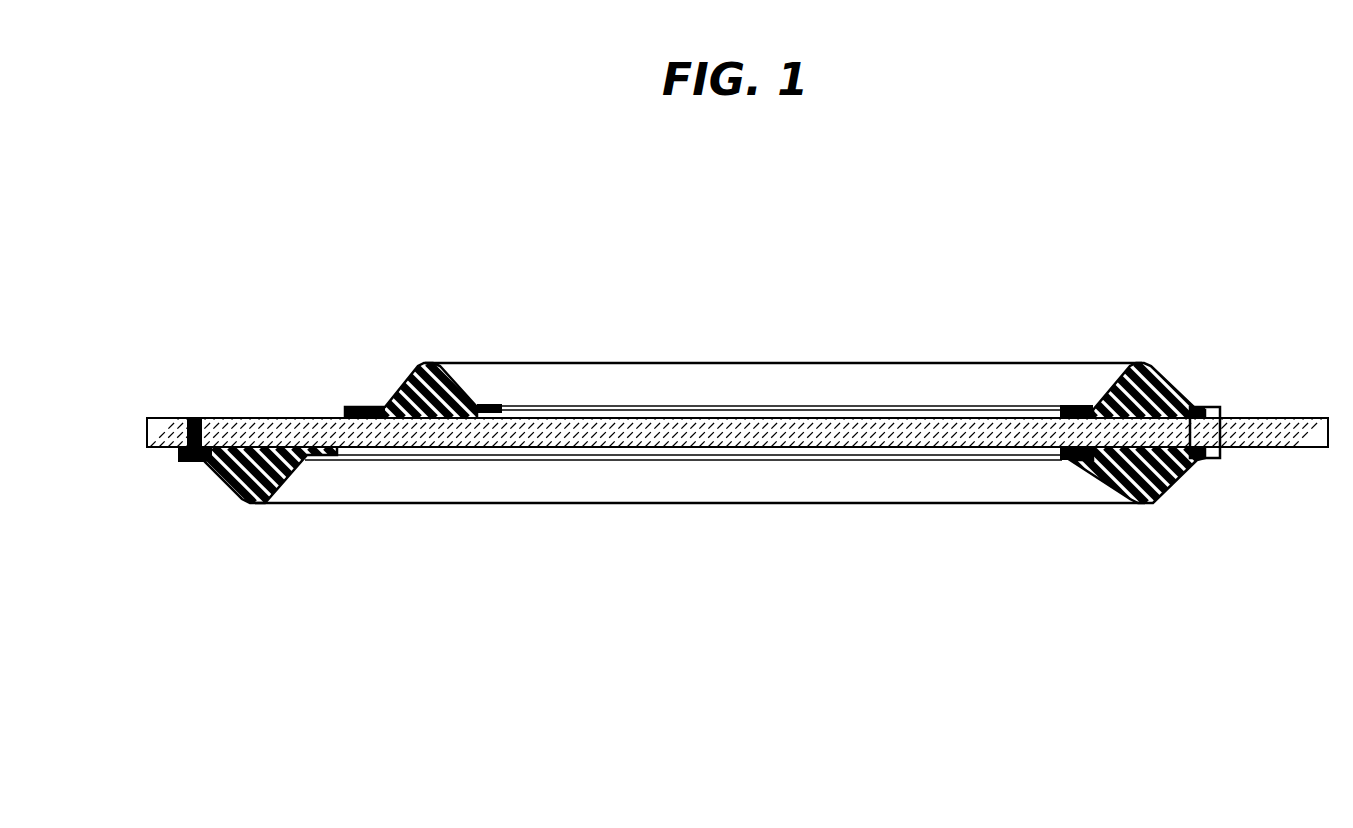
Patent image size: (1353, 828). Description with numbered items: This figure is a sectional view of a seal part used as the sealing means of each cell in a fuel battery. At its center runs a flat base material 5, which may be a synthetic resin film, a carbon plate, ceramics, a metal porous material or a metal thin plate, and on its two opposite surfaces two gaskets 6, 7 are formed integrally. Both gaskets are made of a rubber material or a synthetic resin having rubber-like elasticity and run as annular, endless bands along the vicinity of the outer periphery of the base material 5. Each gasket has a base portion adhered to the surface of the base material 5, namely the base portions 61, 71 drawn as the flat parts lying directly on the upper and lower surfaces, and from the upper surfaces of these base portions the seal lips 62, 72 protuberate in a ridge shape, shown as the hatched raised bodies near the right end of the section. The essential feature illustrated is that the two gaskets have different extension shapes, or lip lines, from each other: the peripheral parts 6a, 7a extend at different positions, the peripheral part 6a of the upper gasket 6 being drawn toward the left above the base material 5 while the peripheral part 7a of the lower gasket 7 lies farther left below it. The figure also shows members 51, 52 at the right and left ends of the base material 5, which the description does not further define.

The base material 5 is at (758, 420).
The holding member 51 is at (1205, 407).
The holding member 52 is at (187, 415).
The gasket 6 is at (770, 320).
The peripheral part 6a is at (397, 367).
The base portion 61 is at (1080, 405).
The seal lip 62 is at (1142, 372).
The gasket 7 is at (698, 553).
The peripheral part 7a is at (230, 502).
The base portion 71 is at (1070, 457).
The seal lip 72 is at (1133, 492).